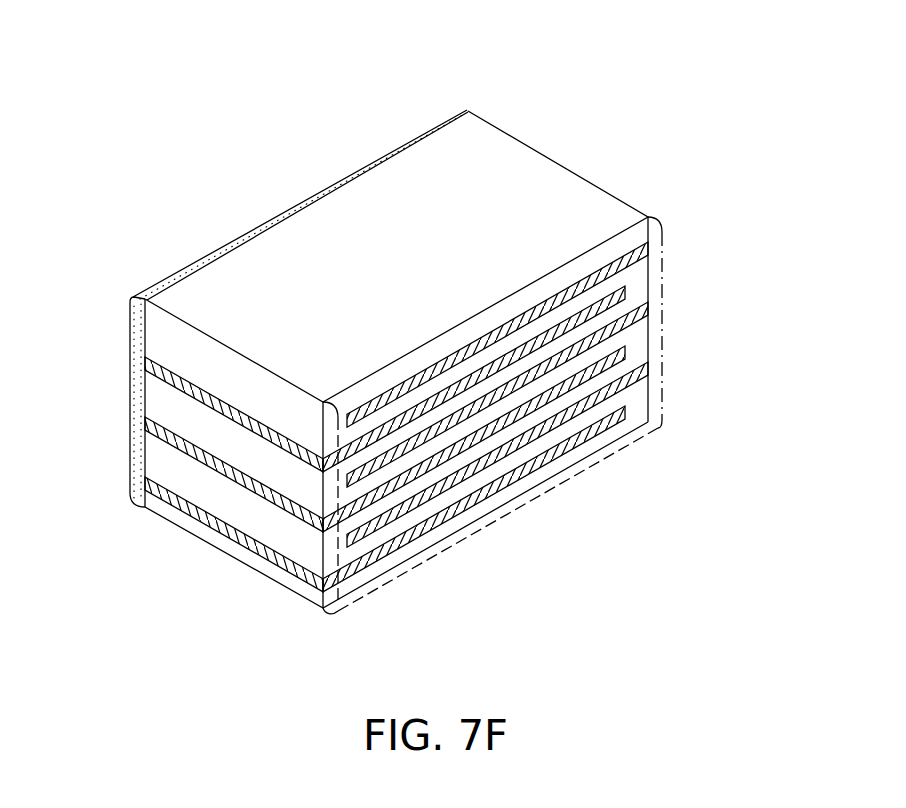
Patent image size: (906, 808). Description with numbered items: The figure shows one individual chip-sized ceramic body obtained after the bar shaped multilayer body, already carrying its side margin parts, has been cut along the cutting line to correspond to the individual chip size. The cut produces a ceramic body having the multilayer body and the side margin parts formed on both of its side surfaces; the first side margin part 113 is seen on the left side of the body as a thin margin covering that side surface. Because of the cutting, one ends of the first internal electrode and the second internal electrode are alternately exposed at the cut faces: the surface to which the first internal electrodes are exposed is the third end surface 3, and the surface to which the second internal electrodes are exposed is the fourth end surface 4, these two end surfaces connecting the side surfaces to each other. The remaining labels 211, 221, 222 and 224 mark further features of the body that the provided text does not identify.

The third end surface 3 is at (164, 567).
The fourth end surface 4 is at (642, 168).
The first side margin part 113 is at (132, 302).
The cover layer 211 is at (521, 167).
The first internal electrode 221 is at (265, 553).
The second internal electrode 222 is at (632, 377).
The dielectric layer 224 is at (460, 522).